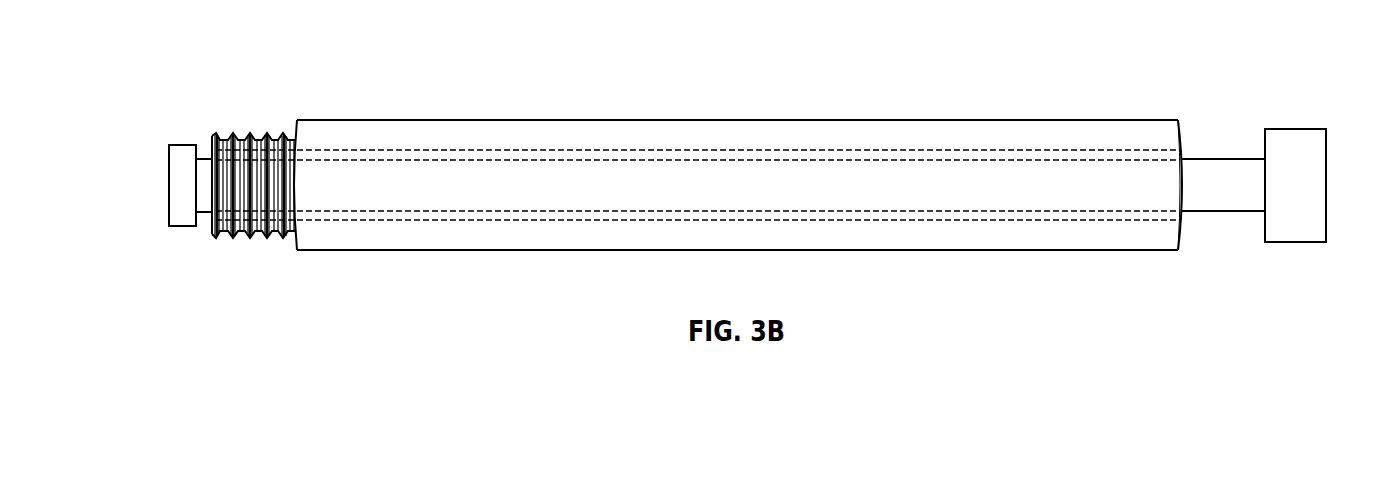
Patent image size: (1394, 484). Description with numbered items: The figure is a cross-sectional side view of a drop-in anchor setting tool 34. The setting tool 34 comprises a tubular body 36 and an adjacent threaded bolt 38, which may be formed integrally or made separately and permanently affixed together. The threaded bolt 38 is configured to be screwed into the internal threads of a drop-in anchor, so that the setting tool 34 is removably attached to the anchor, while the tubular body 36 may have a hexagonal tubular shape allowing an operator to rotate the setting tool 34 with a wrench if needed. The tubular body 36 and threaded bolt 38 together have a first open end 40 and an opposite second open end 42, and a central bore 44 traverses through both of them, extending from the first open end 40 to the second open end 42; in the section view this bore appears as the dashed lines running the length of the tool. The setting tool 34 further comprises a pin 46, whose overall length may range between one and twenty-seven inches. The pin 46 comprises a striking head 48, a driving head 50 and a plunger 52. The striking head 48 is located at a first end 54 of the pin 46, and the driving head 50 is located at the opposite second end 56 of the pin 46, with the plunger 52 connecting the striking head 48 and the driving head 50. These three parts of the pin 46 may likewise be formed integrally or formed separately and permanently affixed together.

The drop-in anchor setting tool 34 is at (1107, 48).
The tubular body 36 is at (458, 119).
The threaded bolt 38 is at (248, 132).
The first open end 40 is at (1188, 157).
The second open end 42 is at (208, 215).
The central bore 44 is at (865, 149).
The pin 46 is at (1233, 220).
The striking head 48 is at (1326, 185).
The driving head 50 is at (183, 153).
The plunger 52 is at (980, 172).
The first end 54 is at (1285, 248).
The second end 56 is at (163, 174).